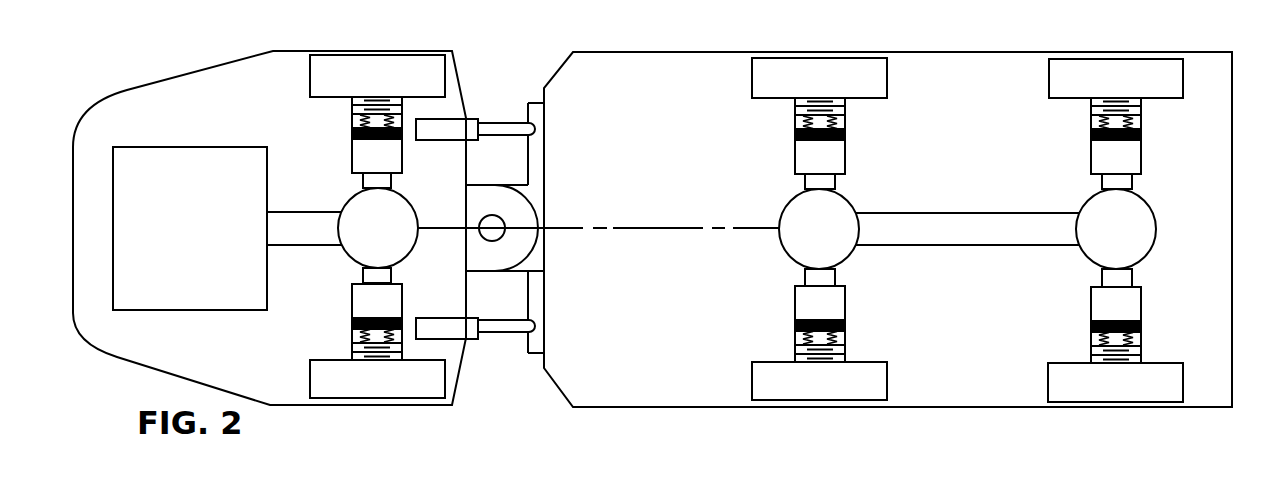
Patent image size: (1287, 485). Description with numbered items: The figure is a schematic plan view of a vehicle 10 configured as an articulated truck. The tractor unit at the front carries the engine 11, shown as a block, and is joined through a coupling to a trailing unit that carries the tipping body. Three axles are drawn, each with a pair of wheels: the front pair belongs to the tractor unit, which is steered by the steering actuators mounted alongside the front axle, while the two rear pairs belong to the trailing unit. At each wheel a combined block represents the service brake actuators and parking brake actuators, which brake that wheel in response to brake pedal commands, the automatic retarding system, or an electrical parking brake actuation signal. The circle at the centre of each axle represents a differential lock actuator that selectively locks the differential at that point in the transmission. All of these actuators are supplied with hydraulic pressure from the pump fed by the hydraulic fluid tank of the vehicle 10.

The vehicle 10 is at (166, 36).
The engine 11 is at (201, 244).